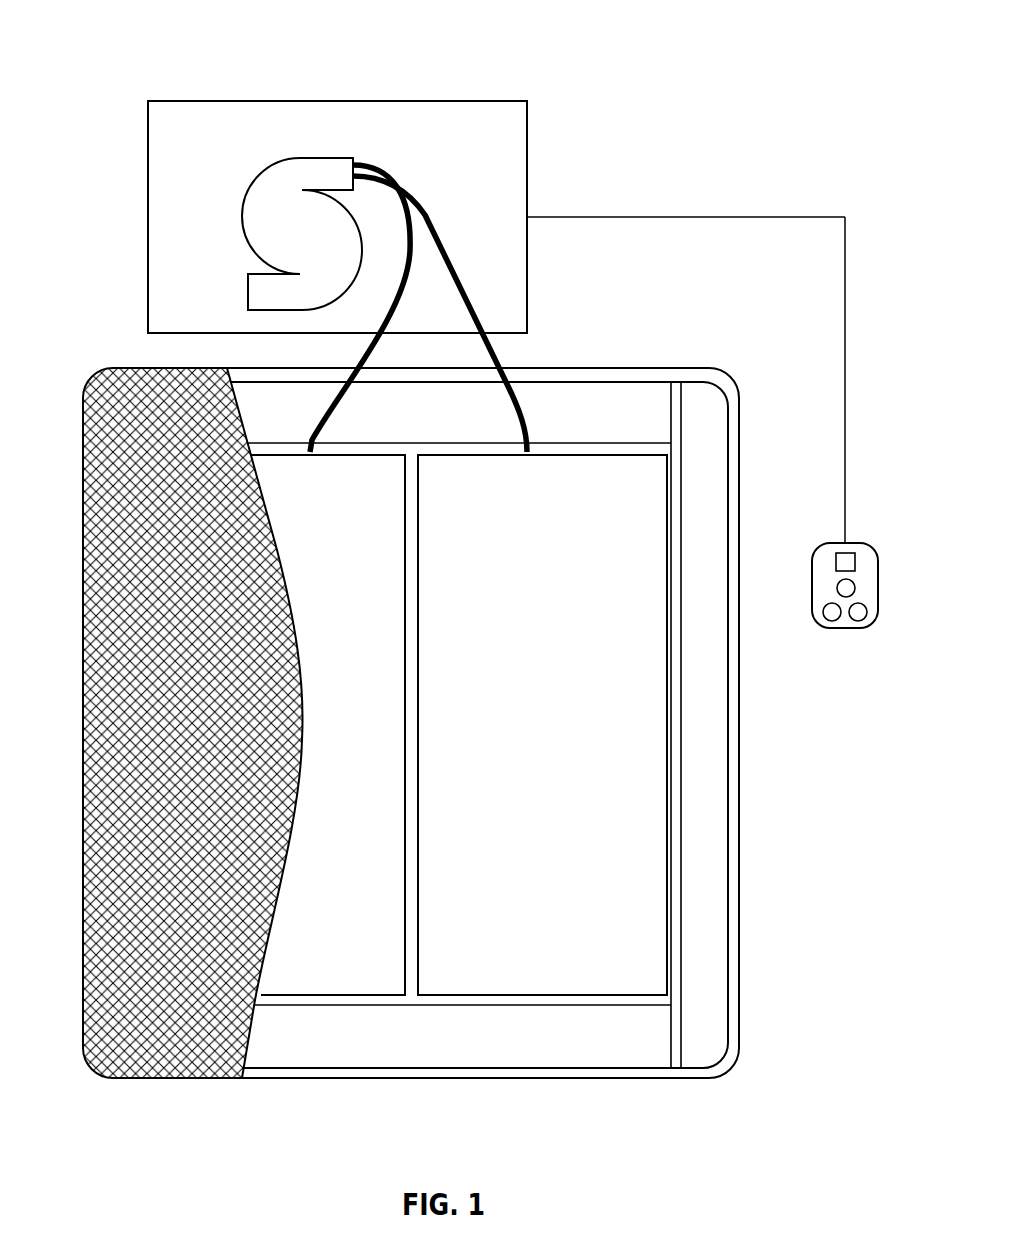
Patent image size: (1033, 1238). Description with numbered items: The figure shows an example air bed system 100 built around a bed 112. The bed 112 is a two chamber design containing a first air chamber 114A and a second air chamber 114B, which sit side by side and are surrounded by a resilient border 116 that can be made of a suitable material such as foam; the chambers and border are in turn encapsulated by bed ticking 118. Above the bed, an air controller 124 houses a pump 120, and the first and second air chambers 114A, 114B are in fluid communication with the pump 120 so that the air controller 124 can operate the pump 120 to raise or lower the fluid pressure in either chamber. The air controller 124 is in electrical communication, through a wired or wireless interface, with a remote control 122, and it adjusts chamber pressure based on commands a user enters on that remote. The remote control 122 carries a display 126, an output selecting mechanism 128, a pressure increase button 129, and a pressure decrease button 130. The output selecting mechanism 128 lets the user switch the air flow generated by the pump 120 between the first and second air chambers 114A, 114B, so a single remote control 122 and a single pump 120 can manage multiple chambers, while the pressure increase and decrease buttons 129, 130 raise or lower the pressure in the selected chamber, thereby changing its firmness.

The air bed system 100 is at (146, 50).
The bed 112 is at (94, 345).
The first air chamber 114A is at (327, 725).
The second air chamber 114B is at (542, 725).
The resilient border 116 is at (708, 825).
The bed ticking 118 is at (148, 491).
The pump 120 is at (242, 201).
The remote control 122 is at (866, 543).
The air controller 124 is at (527, 101).
The display 126 is at (855, 562).
The output selecting mechanism 128 is at (855, 588).
The pressure increase button 129 is at (828, 621).
The pressure decrease button 130 is at (866, 614).